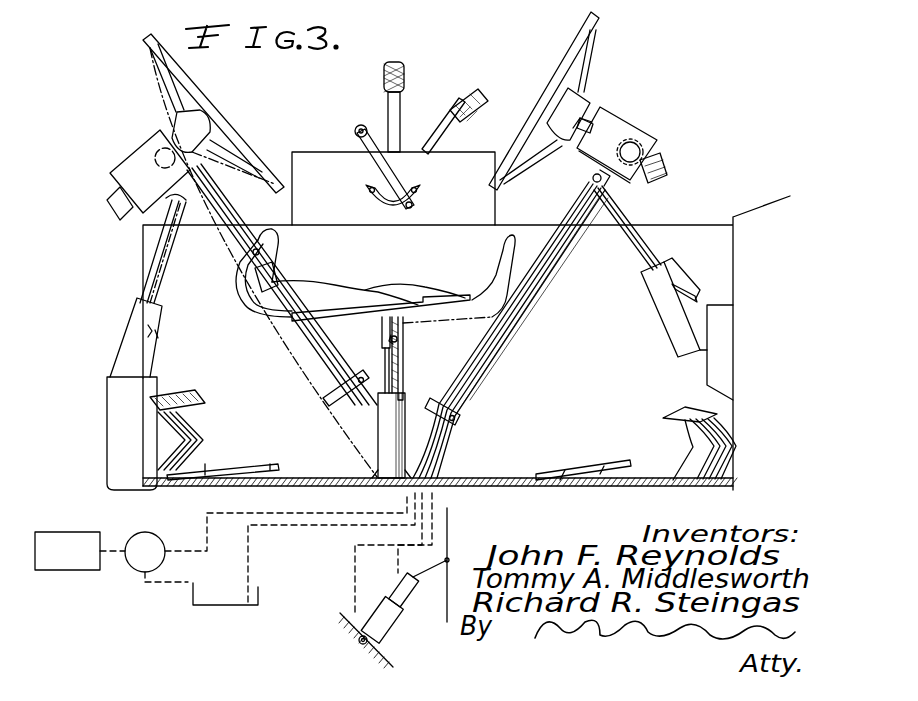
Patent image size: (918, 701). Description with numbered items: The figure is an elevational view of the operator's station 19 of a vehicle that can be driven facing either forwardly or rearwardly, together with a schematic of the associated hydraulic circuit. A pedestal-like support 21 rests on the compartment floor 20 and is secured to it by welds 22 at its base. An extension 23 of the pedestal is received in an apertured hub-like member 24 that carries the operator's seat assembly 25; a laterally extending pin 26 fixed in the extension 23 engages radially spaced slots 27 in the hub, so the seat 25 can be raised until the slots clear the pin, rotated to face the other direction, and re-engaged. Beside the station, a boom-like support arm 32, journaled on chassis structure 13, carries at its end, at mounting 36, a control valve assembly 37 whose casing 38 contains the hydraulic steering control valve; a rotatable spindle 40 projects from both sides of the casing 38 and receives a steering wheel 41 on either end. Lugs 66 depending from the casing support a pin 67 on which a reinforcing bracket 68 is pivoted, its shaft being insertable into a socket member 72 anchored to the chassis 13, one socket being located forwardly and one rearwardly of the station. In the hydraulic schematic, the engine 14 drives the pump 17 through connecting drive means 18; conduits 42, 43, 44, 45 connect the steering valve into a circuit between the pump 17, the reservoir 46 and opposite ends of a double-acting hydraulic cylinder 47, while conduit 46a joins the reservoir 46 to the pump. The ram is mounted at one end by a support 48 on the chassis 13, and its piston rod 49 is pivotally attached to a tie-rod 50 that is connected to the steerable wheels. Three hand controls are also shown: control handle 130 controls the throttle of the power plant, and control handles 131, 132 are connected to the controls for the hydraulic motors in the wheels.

The chassis structure 13 is at (340, 620).
The engine 14 is at (83, 530).
The pump 17 is at (145, 532).
The connecting drive means 18 is at (113, 553).
The operator's station 19 is at (203, 294).
The compartment floor 20 is at (295, 478).
The pedestal-like support 21 is at (397, 410).
The welds 22 is at (376, 478).
The extension 23 is at (385, 366).
The hub-like member 24 is at (405, 324).
The operator's seat assembly 25 is at (250, 290).
The pin 26 is at (404, 345).
The slots 27 is at (397, 350).
The support arm 32 is at (568, 222).
The mounting 36 is at (648, 135).
The control valve assembly 37 is at (643, 126).
The casing 38 is at (605, 112).
The spindle 40 is at (664, 165).
The steering wheel 41 is at (175, 75).
The conduit 42 is at (187, 545).
The conduit 43 is at (250, 562).
The conduit 44 is at (400, 560).
The conduit 45 is at (353, 553).
The reservoir 46 is at (196, 605).
The conduit 46a is at (165, 582).
The double-acting hydraulic cylinder 47 is at (395, 630).
The support 48 is at (358, 641).
The piston rod 49 is at (420, 575).
The tie-rod 50 is at (448, 530).
The ears 66 is at (598, 168).
The pin 67 is at (592, 180).
The reinforcing bracket 68 is at (642, 216).
The socket member 72 is at (656, 327).
The control handle 130 is at (356, 129).
The control handle 131 is at (402, 68).
The control handle 132 is at (473, 92).